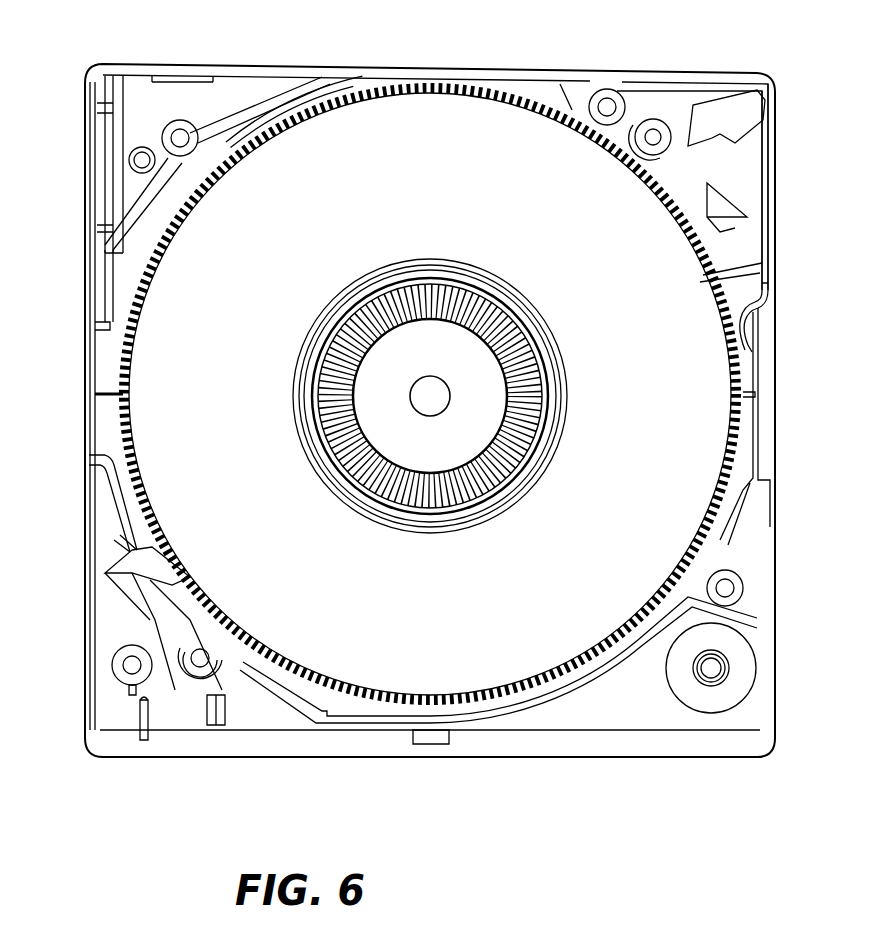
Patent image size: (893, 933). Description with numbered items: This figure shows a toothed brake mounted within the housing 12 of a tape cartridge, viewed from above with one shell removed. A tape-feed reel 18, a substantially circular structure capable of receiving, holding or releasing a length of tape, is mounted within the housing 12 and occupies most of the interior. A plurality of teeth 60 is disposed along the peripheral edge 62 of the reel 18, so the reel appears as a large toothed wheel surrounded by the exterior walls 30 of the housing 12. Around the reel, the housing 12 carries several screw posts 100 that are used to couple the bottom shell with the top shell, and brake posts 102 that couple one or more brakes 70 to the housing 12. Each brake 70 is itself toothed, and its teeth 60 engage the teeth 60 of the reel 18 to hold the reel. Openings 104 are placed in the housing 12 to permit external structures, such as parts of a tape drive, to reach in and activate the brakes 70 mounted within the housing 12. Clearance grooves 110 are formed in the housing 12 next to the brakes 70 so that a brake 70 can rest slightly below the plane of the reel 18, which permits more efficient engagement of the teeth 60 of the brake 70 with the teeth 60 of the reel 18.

The housing 12 is at (594, 758).
The tape-feed reel 18 is at (392, 108).
The exterior walls 30 is at (735, 758).
The teeth 60 is at (770, 325).
The peripheral edge 62 is at (760, 490).
The brake 70 is at (713, 110).
The screw posts 100 is at (180, 138).
The brake posts 102 is at (653, 137).
The openings 104 is at (775, 128).
The clearance grooves 110 is at (745, 215).